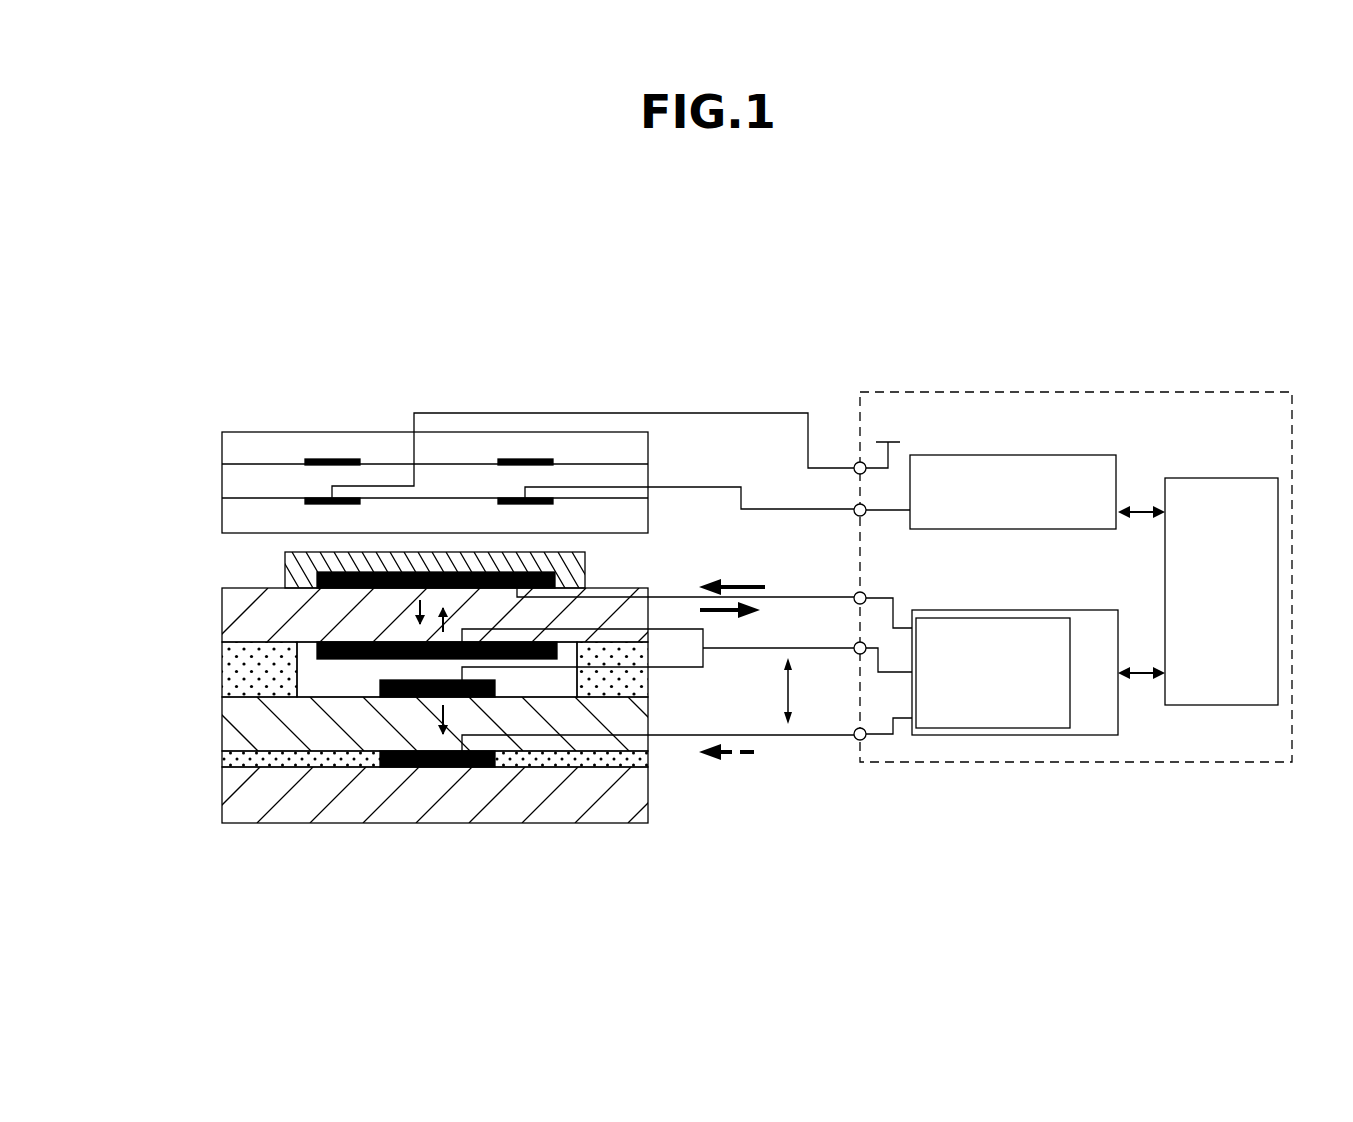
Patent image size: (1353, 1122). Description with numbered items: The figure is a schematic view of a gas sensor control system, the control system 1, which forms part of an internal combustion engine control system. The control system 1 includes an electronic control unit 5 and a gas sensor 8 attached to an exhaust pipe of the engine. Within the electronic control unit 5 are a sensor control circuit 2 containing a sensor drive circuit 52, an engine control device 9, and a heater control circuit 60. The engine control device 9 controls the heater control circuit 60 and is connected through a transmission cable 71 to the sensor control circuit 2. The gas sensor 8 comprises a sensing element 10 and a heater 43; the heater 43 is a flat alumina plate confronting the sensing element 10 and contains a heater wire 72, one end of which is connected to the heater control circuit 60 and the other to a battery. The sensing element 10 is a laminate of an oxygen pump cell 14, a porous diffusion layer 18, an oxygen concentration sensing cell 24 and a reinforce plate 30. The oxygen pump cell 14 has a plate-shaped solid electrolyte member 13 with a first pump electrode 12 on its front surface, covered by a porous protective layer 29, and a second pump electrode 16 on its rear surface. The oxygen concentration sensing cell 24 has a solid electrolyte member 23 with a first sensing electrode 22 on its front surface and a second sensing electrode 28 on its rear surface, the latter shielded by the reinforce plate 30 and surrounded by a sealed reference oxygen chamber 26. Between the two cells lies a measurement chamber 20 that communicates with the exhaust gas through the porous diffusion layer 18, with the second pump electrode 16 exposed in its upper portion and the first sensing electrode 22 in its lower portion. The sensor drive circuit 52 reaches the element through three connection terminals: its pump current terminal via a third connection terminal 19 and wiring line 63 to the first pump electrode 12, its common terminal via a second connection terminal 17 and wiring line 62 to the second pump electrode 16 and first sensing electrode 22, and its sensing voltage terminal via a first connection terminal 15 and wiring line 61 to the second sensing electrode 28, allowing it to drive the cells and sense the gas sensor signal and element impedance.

The control system 1 is at (887, 348).
The sensor control circuit 2 is at (1010, 735).
The electronic control unit 5 is at (1082, 392).
The gas sensor 8 is at (285, 373).
The engine control device 9 is at (1222, 478).
The sensing element 10 is at (174, 514).
The first pump electrode 12 is at (337, 589).
The solid electrolyte member 13 is at (243, 602).
The oxygen pump cell 14 is at (148, 547).
The first connection terminal 15 is at (858, 741).
The second pump electrode 16 is at (352, 642).
The second connection terminal 17 is at (857, 655).
The porous diffusion layer 18 is at (246, 649).
The third connection terminal 19 is at (856, 593).
The measurement chamber 20 is at (312, 670).
The first sensing electrode 22 is at (362, 685).
The solid electrolyte member 23 is at (242, 743).
The oxygen concentration sensing cell 24 is at (148, 685).
The reference oxygen chamber 26 is at (496, 768).
The second sensing electrode 28 is at (345, 762).
The porous protective layer 29 is at (586, 566).
The reinforce plate 30 is at (242, 806).
The heater 43 is at (262, 432).
The sensor drive circuit 52 is at (992, 612).
The heater control circuit 60 is at (1012, 455).
The wiring line 61 is at (787, 738).
The wiring line 62 is at (765, 648).
The wiring line 63 is at (787, 597).
The transmission cable 71 is at (1141, 677).
The heater wire 72 is at (535, 504).